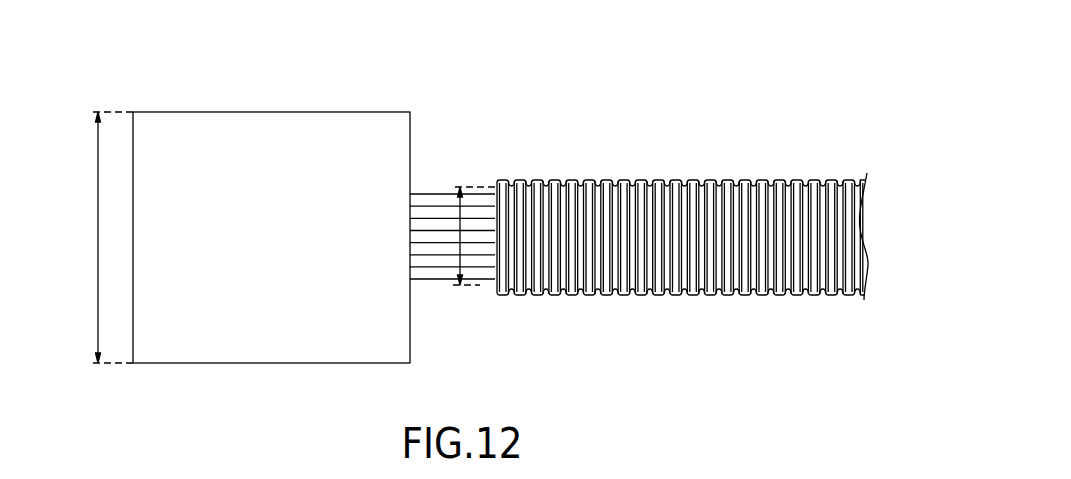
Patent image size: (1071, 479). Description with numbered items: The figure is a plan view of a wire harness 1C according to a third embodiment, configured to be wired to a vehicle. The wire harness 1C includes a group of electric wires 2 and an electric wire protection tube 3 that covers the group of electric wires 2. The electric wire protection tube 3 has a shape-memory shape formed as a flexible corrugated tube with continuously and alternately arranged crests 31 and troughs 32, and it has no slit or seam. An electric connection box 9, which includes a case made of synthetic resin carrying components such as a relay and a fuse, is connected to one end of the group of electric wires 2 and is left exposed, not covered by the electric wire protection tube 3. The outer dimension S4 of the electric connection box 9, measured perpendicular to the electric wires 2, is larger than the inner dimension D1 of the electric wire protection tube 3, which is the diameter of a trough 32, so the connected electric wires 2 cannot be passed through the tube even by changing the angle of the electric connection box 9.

The wire harness 1C is at (796, 78).
The electric wires 2 is at (483, 270).
The electric wire protection tube 3 is at (682, 232).
The crests 31 is at (537, 180).
The troughs 32 is at (546, 292).
The electric connection box 9 is at (270, 112).
The inner dimension D1 is at (460, 258).
The outer dimension S4 is at (98, 233).